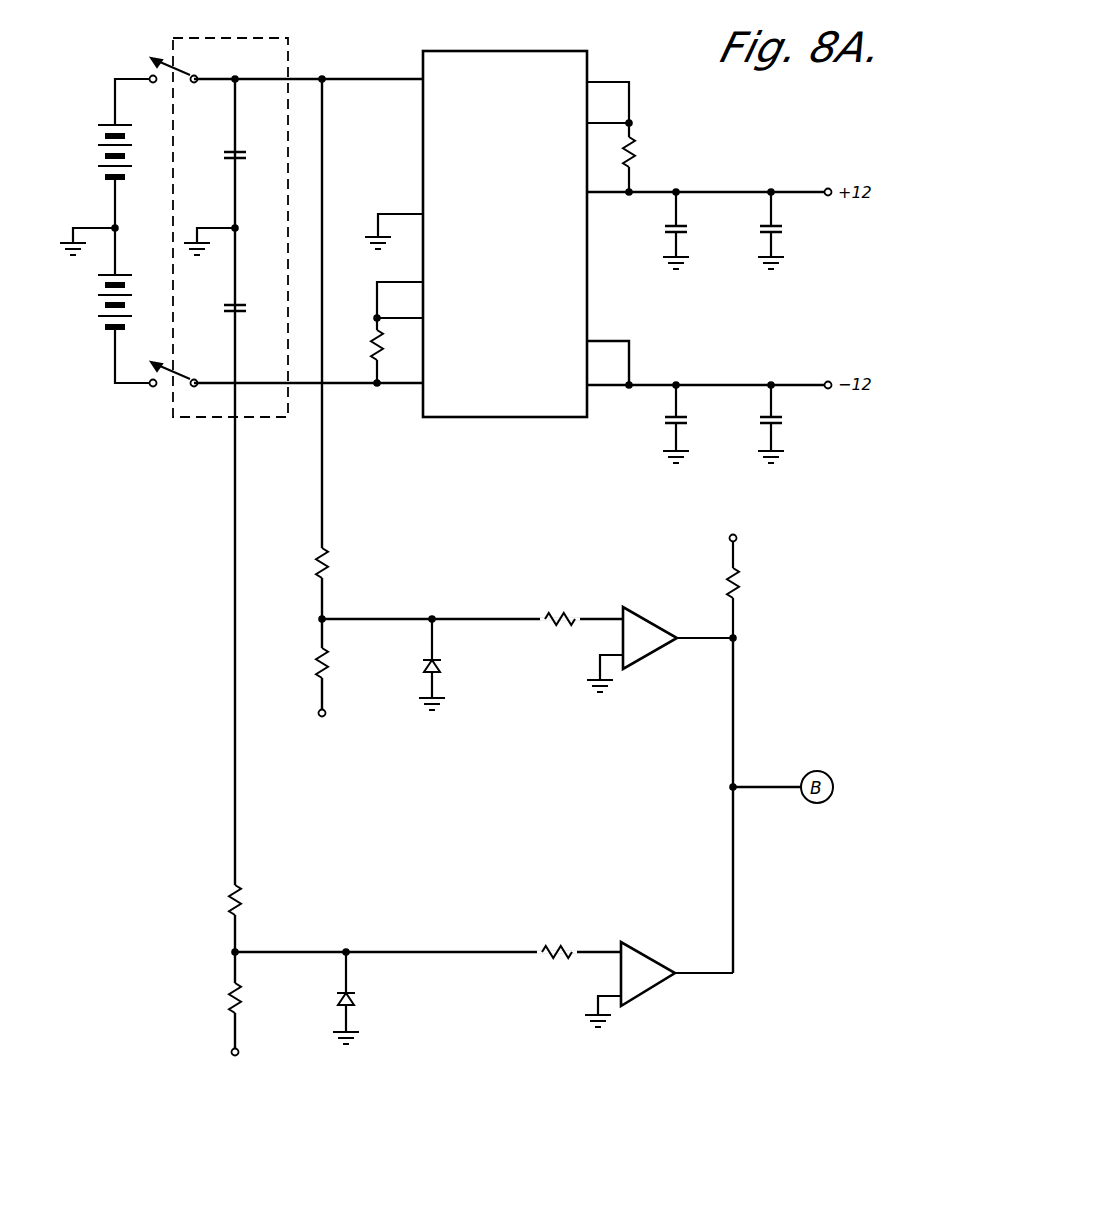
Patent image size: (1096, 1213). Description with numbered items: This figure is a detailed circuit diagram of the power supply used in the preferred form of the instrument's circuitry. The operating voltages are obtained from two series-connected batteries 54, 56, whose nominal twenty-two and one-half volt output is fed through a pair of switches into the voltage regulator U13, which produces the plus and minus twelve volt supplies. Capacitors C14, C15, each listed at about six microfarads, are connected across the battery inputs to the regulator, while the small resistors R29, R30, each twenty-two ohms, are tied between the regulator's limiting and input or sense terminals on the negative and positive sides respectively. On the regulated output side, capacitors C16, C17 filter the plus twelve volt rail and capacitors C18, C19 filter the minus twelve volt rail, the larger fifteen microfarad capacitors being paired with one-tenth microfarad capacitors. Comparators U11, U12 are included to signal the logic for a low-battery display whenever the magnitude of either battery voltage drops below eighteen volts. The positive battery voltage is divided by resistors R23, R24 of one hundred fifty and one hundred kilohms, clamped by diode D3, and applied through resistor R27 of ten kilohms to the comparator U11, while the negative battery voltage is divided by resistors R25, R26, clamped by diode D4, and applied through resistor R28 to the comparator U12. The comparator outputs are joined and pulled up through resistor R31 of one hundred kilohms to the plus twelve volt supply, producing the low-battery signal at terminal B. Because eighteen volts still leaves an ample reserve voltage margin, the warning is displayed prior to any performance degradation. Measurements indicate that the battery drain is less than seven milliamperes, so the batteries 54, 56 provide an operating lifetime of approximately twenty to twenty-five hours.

The battery 54 is at (97, 137).
The battery 56 is at (97, 297).
The capacitor C14 is at (213, 154).
The capacitor C15 is at (212, 307).
The capacitor C16 is at (658, 228).
The capacitor C17 is at (791, 228).
The capacitor C18 is at (657, 422).
The capacitor C19 is at (791, 422).
The resistor R23 is at (339, 583).
The resistor R24 is at (333, 680).
The resistor R25 is at (213, 918).
The resistor R26 is at (218, 1019).
The resistor R27 is at (560, 608).
The resistor R28 is at (557, 962).
The resistor R29 is at (380, 334).
The resistor R30 is at (627, 139).
The resistor R31 is at (752, 580).
The diode D3 is at (444, 664).
The diode D4 is at (358, 998).
The comparator U11 is at (660, 646).
The comparator U12 is at (659, 984).
The voltage regulator U13 is at (505, 234).